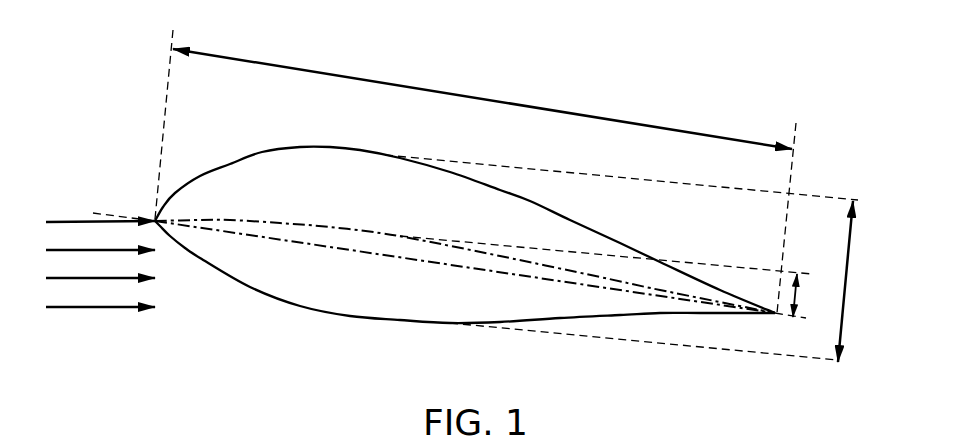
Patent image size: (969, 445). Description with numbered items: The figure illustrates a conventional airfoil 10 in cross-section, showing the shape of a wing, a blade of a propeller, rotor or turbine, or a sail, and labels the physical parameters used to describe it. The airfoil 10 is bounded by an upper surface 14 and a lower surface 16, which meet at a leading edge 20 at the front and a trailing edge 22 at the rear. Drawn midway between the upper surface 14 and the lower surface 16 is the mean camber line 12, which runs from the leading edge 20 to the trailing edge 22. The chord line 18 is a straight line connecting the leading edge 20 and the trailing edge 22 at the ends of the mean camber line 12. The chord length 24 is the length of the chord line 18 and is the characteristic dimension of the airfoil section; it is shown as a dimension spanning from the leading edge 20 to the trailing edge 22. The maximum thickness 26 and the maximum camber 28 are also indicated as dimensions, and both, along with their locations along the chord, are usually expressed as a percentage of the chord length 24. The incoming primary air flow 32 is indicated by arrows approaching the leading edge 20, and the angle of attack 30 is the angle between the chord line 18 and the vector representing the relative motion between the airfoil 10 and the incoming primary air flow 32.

The airfoil 10 is at (133, 55).
The mean camber line 12 is at (262, 220).
The upper surface 14 is at (262, 151).
The lower surface 16 is at (284, 304).
The chord line 18 is at (278, 240).
The leading edge 20 is at (155, 219).
The trailing edge 22 is at (775, 315).
The chord length 24 is at (375, 79).
The maximum thickness 26 is at (850, 238).
The maximum camber 28 is at (798, 295).
The angle of attack 30 is at (93, 214).
The incoming primary air flow 32 is at (72, 309).